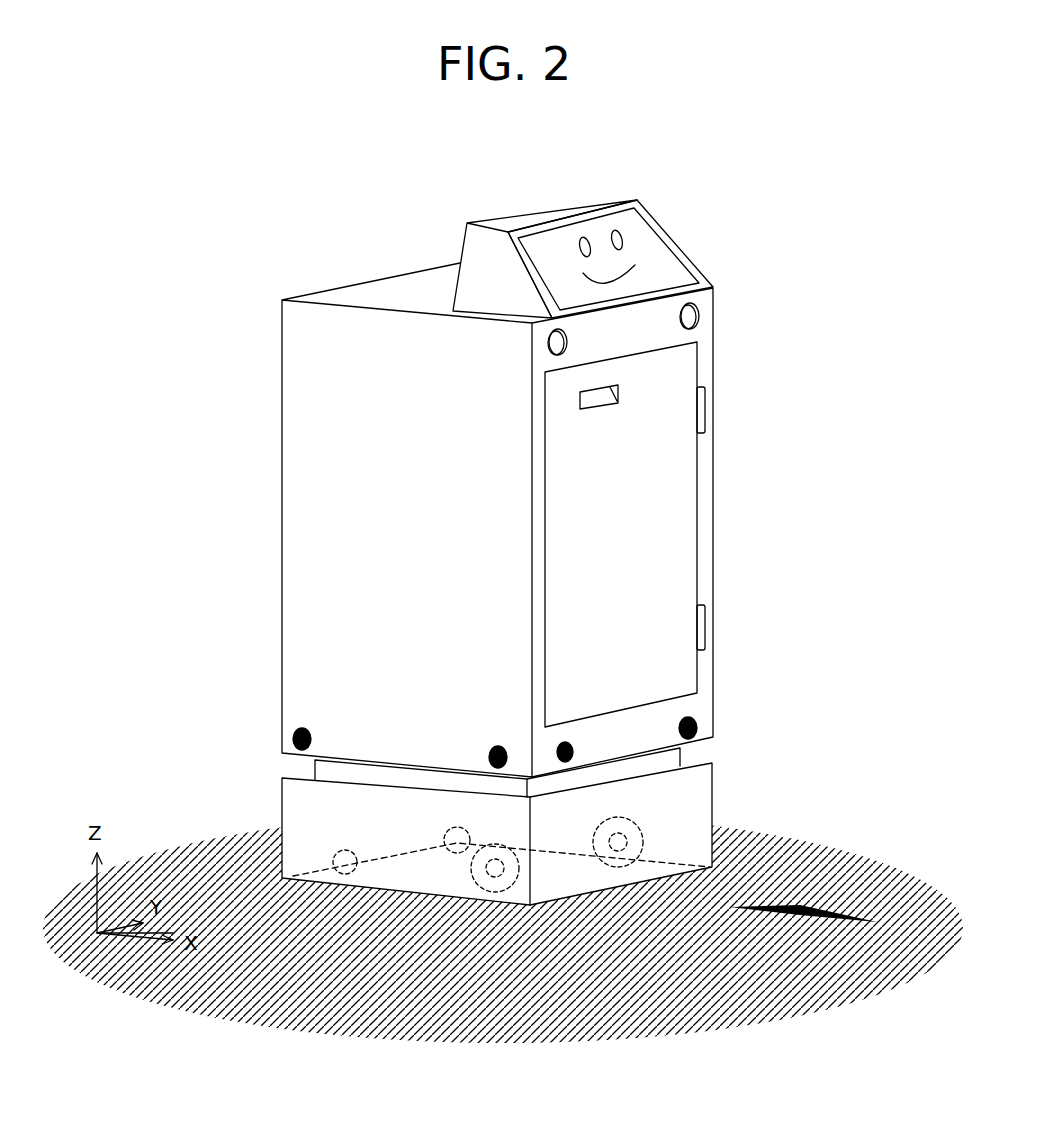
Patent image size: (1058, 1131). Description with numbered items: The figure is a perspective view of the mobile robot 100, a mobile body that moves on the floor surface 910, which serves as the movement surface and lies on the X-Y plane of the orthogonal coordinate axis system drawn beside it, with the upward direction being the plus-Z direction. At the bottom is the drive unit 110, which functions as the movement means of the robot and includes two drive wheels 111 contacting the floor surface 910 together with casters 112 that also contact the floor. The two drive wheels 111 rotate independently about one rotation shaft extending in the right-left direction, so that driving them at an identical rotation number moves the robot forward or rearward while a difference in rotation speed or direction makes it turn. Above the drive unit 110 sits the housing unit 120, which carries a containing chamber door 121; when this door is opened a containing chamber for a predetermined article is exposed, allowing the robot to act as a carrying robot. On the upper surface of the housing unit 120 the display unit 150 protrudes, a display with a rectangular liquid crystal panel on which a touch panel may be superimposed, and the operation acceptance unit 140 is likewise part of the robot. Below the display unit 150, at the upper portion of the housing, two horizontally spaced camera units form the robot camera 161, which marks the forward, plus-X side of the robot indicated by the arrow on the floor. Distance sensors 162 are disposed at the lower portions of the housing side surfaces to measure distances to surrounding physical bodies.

The mobile robot 100 is at (552, 533).
The drive unit 110 is at (567, 773).
The drive wheels 111 is at (643, 830).
The casters 112 is at (345, 860).
The housing unit 120 is at (548, 520).
The containing chamber door 121 is at (665, 485).
The operation acceptance unit 140 is at (620, 240).
The display unit 150 is at (663, 270).
The robot camera 161 is at (690, 318).
The distance sensor 162 is at (296, 738).
The floor surface 910 is at (798, 866).